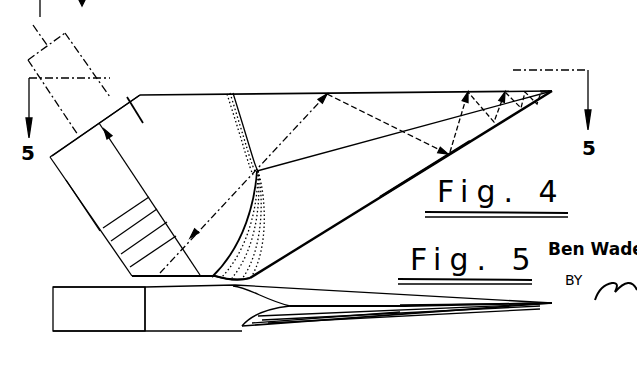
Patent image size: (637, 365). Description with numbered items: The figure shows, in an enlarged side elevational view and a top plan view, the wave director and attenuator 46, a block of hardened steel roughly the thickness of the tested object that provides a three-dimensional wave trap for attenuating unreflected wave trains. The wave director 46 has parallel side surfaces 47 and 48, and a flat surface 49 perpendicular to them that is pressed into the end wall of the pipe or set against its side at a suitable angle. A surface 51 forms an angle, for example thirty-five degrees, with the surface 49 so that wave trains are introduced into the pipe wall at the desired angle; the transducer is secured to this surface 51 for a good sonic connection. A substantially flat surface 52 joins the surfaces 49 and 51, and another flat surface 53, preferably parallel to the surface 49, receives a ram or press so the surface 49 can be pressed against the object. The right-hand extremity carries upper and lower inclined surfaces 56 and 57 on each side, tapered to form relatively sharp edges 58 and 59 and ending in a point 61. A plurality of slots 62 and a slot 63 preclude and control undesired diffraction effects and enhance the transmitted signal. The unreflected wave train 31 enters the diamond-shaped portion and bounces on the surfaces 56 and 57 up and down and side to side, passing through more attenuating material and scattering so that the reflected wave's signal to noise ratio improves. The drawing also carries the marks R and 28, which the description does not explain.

In FIG. 4, the radius of swing of bar R is at (110, 93).
In FIG. 4, the direction arrow 28 is at (142, 183).
In FIG. 4, the unreflected wave train 31 is at (230, 198).
In FIG. 4, the wave director 46 is at (200, 92).
In FIG. 4, the side surface 47 is at (110, 190).
In FIG. 5, the side surface 47 is at (128, 333).
In FIG. 5, the side surface 48 is at (105, 287).
In FIG. 4, the flat surface 49 is at (262, 279).
In FIG. 4, the surface 51 is at (133, 97).
In FIG. 5, the surface 51 is at (113, 315).
In FIG. 4, the flat surface 52 is at (100, 232).
In FIG. 4, the flat surface 53 is at (227, 93).
In FIG. 5, the flat surface 53 is at (194, 320).
In FIG. 4, the upper inclined surface 56 is at (433, 102).
In FIG. 5, the upper inclined surface 56 is at (318, 298).
In FIG. 4, the lower inclined surface 57 is at (346, 200).
In FIG. 4, the sharp edge 58 is at (373, 93).
In FIG. 5, the sharp edge 58 is at (426, 308).
In FIG. 4, the sharp edge 59 is at (422, 173).
In FIG. 4, the point 61 is at (553, 92).
In FIG. 5, the point 61 is at (553, 304).
In FIG. 4, the slots 62 is at (147, 222).
In FIG. 4, the slot 63 is at (145, 123).